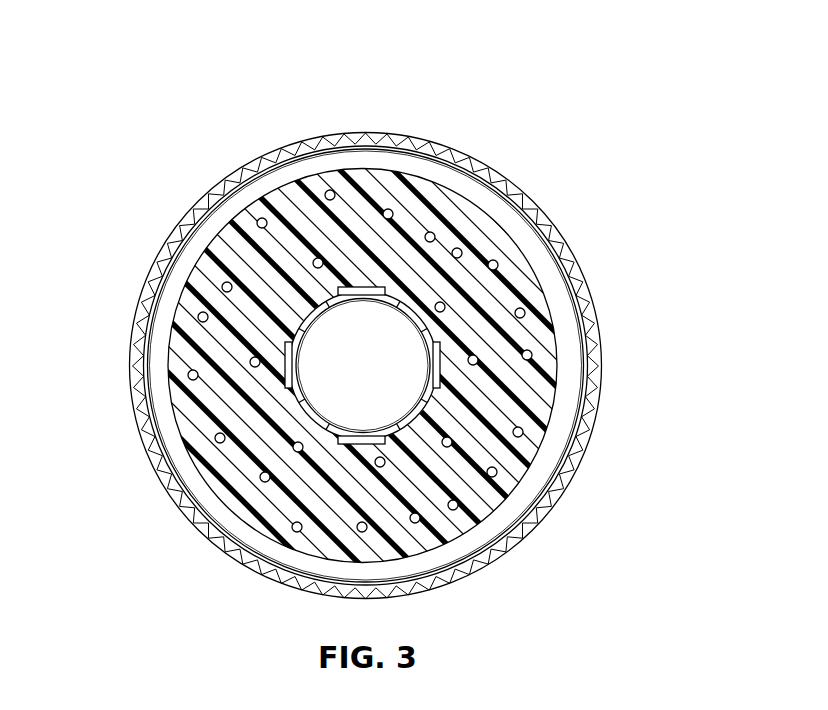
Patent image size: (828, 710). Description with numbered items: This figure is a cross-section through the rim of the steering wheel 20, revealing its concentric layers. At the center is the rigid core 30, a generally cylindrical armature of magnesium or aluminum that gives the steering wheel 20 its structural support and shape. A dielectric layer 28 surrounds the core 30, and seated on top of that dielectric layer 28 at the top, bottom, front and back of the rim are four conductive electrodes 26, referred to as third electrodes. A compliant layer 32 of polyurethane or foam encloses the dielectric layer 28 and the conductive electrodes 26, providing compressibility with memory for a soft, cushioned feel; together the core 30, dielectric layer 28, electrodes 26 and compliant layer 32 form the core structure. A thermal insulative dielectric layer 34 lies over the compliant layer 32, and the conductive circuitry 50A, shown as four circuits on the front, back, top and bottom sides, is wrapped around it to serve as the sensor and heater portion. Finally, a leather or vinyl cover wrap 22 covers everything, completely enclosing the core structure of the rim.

The steering wheel 20 is at (170, 137).
The cover wrap 22 is at (188, 222).
The conductive electrodes 26 is at (356, 292).
The dielectric layer 28 is at (462, 265).
The core 30 is at (380, 327).
The compliant layer 32 is at (540, 276).
The thermal insulative dielectric layer 34 is at (530, 487).
The conductive circuitry 50A is at (331, 143).